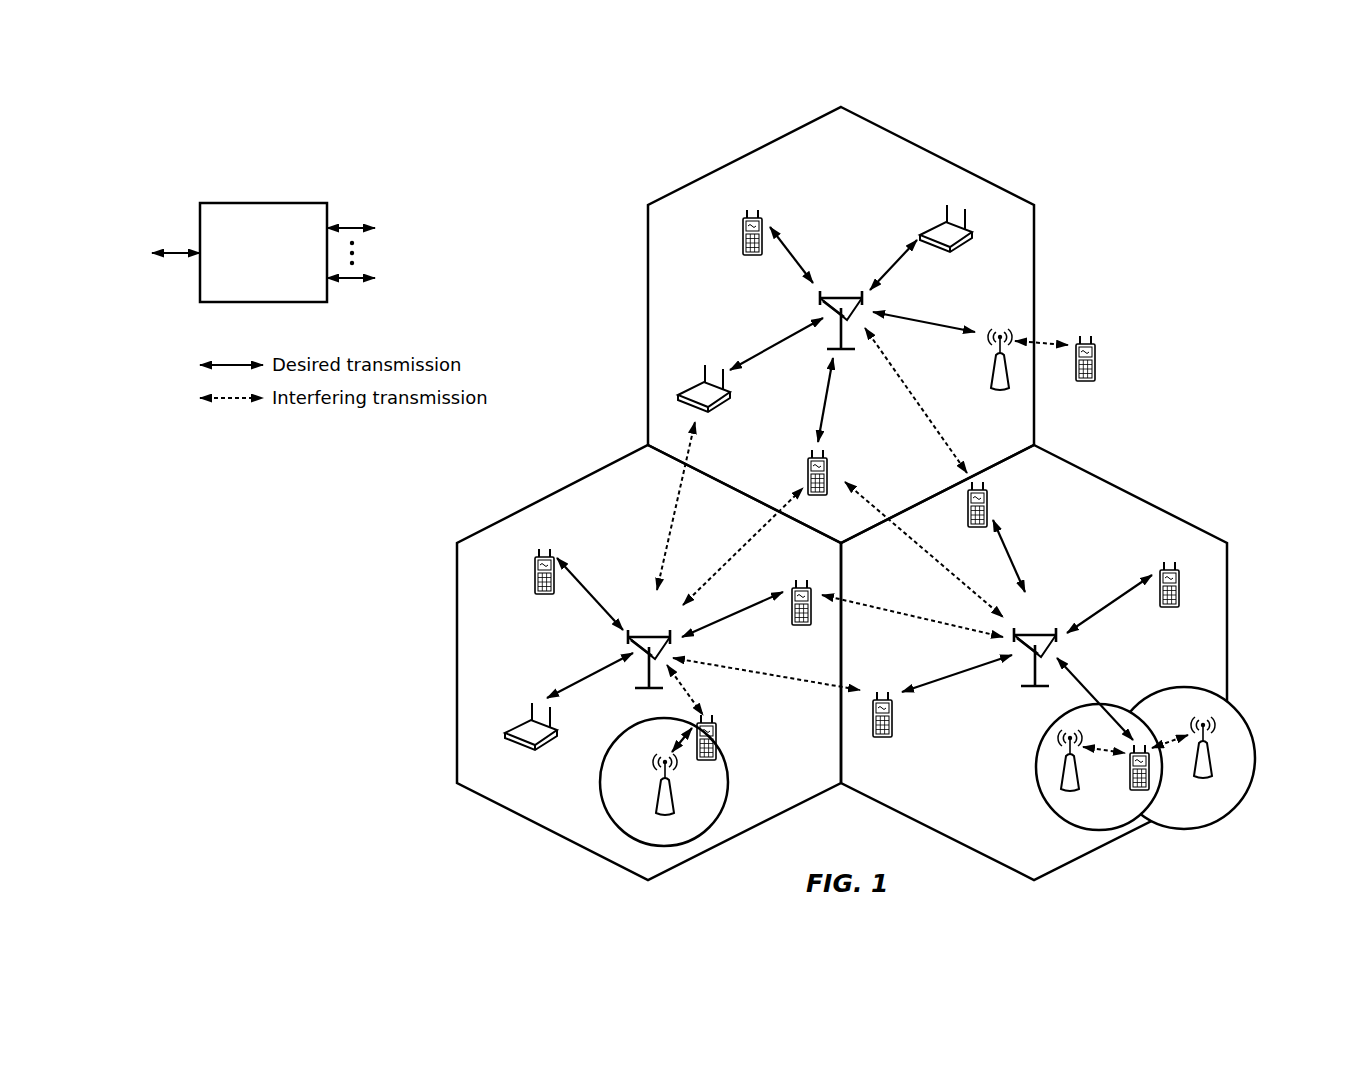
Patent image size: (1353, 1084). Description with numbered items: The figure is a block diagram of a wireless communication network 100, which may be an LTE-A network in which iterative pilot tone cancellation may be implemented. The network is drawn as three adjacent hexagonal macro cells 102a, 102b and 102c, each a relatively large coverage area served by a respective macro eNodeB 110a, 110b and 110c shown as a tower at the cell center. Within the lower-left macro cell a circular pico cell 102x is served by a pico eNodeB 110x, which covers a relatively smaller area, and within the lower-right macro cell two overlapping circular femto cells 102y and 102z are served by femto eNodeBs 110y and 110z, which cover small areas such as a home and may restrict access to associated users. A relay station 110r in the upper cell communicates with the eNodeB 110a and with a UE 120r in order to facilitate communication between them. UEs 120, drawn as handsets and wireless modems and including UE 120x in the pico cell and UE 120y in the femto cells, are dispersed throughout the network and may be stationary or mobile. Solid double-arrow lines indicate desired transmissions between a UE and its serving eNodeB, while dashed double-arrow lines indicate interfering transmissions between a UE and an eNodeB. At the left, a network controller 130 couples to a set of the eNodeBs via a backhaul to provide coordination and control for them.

The wireless communication network 100 is at (1168, 168).
The macro cell 102a is at (950, 146).
The macro cell 102b is at (556, 493).
The macro cell 102c is at (1130, 494).
The pico cell 102x is at (619, 737).
The femto cell 102y is at (1043, 737).
The femto cell 102z is at (1183, 688).
The macro eNodeB 110a is at (846, 286).
The macro eNodeB 110b is at (648, 635).
The macro eNodeB 110c is at (1035, 633).
The relay station 110r is at (992, 375).
The pico eNodeB 110x is at (674, 808).
The femto eNodeB 110y is at (1079, 785).
The femto eNodeB 110z is at (1211, 772).
The user equipment 120 is at (744, 227).
The UE 120r is at (1090, 382).
The UE 120x is at (716, 739).
The UE 120y is at (1130, 787).
The network controller 130 is at (258, 203).